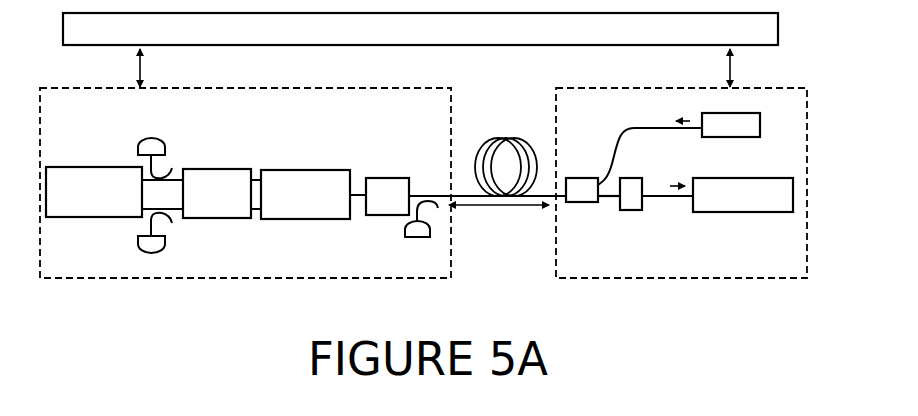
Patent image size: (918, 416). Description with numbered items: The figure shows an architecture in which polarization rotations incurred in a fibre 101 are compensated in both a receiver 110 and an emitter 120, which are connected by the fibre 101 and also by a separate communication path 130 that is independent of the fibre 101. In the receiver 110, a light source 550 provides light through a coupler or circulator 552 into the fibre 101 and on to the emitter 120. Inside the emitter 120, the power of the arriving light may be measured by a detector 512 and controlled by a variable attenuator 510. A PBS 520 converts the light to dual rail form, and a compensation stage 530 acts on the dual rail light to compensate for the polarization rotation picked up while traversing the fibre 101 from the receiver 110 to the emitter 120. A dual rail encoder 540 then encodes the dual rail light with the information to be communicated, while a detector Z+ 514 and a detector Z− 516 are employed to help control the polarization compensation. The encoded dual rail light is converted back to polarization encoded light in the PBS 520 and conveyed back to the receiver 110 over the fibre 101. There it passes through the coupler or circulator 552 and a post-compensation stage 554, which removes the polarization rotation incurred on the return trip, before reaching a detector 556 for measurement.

The communication path 130 is at (474, 40).
The emitter 120 is at (245, 184).
The receiver 110 is at (681, 184).
The dual rail encoder 540 is at (73, 205).
The compensation stage 530 is at (196, 206).
The PBS 520 is at (284, 207).
The variable attenuator 510 is at (390, 185).
The detector Z+ 514 is at (157, 143).
The detector Z− 516 is at (229, 250).
The detector 512 is at (409, 237).
The fibre 101 is at (505, 197).
The coupler or circulator 552 is at (580, 186).
The post-compensation stage 554 is at (626, 210).
The detector 556 is at (743, 195).
The light source 550 is at (744, 116).